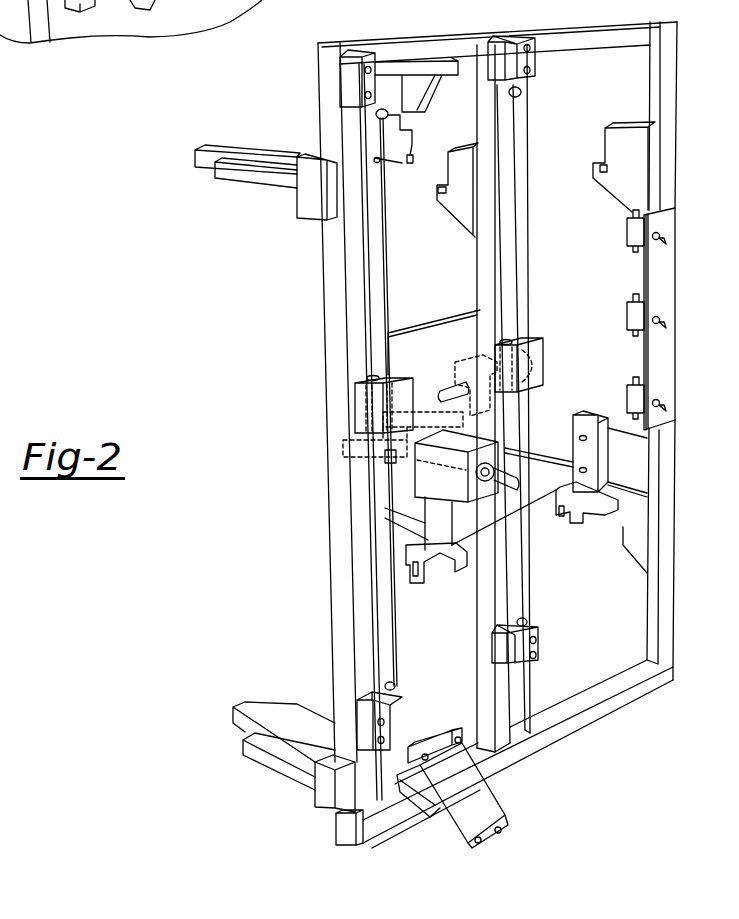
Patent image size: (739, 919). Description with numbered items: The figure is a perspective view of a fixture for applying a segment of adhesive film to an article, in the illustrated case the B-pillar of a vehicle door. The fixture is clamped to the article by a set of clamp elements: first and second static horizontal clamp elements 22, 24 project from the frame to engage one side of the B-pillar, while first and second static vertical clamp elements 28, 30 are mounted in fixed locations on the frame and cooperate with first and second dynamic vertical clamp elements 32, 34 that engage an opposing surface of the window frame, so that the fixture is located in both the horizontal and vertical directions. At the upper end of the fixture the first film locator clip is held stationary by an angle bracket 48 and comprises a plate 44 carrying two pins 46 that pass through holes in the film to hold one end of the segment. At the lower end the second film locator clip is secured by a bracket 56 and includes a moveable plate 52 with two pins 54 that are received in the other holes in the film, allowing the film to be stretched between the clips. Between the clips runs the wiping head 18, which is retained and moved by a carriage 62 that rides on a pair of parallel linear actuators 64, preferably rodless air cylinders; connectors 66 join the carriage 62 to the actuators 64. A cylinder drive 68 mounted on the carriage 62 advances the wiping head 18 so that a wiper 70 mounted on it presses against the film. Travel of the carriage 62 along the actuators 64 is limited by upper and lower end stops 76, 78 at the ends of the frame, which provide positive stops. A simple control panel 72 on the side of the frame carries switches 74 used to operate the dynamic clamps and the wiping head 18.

The wiping head 18 is at (378, 476).
The first static horizontal clamp element 22 is at (275, 185).
The second static horizontal clamp element 24 is at (252, 753).
The first static vertical clamp element 28 is at (467, 208).
The second static vertical clamp element 30 is at (603, 163).
The first dynamic vertical clamp element 32 is at (412, 555).
The second dynamic vertical clamp element 34 is at (595, 503).
The plate 44 is at (413, 132).
The pins 46 is at (409, 163).
The angle bracket 48 is at (415, 88).
The moveable plate 52 is at (490, 794).
The pins 54 is at (458, 738).
The bracket 56 is at (400, 760).
The carriage 62 is at (447, 342).
The linear actuators 64 is at (365, 292).
The connectors 66 is at (390, 405).
The cylinder drive 68 is at (457, 497).
The wiper 70 is at (352, 450).
The control panel 72 is at (650, 285).
The switches 74 is at (654, 238).
The upper end stop 76 is at (362, 83).
The lower end stop 78 is at (365, 718).